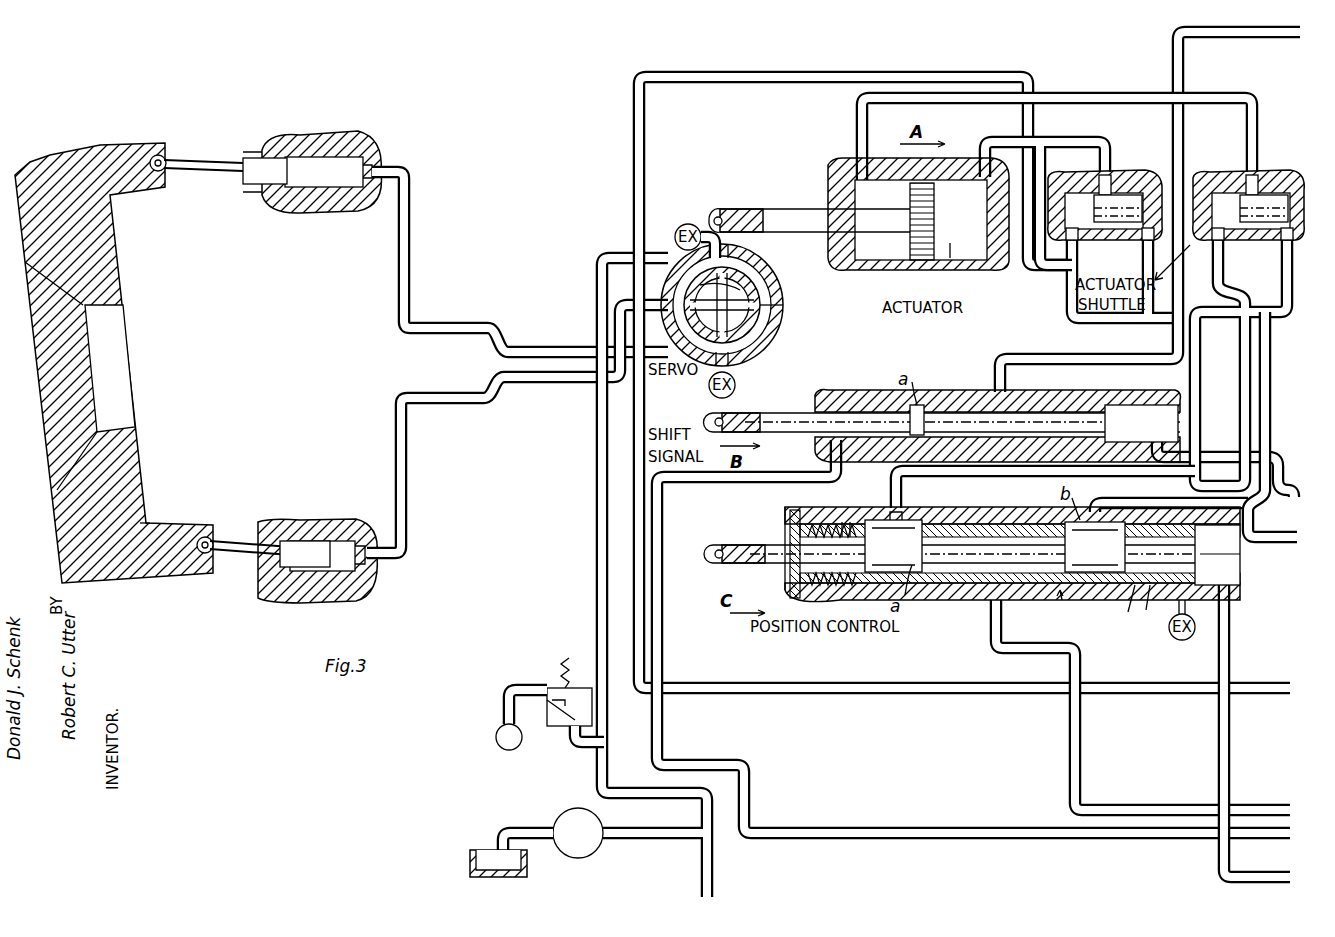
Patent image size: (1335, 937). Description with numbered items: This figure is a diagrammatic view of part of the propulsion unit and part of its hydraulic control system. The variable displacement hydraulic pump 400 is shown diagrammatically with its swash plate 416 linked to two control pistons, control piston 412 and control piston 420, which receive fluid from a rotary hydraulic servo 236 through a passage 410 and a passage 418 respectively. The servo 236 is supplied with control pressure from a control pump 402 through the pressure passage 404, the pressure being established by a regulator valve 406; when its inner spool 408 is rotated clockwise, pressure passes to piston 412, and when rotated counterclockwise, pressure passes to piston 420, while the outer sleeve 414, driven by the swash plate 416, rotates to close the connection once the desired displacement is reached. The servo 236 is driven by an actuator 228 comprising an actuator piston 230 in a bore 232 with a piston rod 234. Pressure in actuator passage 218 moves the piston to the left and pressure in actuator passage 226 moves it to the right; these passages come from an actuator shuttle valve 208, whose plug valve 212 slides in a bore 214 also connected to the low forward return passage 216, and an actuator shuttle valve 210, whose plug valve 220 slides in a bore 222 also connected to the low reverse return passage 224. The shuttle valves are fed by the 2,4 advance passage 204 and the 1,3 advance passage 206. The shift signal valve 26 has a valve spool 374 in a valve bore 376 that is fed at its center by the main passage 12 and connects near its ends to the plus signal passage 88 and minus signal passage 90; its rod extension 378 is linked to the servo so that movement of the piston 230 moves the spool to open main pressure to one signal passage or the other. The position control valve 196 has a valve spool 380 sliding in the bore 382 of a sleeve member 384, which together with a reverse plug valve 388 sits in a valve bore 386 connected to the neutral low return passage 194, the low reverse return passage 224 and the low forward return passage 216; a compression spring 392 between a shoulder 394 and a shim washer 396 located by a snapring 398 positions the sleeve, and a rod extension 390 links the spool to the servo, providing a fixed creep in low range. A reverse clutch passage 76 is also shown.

The main passage 12 is at (1172, 52).
The shift signal valve 26 is at (966, 382).
The reverse clutch passage 76 is at (1265, 878).
The plus signal passage 88 is at (1212, 452).
The minus signal passage 90 is at (727, 478).
The neutral low return passage 194 is at (988, 625).
The position control valve 196 is at (1044, 615).
The 2,4 advance passage 204 is at (1243, 690).
The 1,3 advance passage 206 is at (1290, 272).
The actuator shuttle valve 208 is at (1160, 185).
The actuator shuttle valve 210 is at (1197, 185).
The plug valve 212 is at (1105, 192).
The bore 214 is at (1080, 232).
The low forward return passage 216 is at (1070, 290).
The actuator passage 218 is at (1053, 139).
The plug valve 220 is at (1272, 192).
The bore 222 is at (1241, 361).
The low reverse return passage 224 is at (1242, 322).
The actuator passage 226 is at (1208, 96).
The actuator 228 is at (893, 268).
The actuator piston 230 is at (935, 218).
The bore 232 is at (950, 258).
The piston rod 234 is at (790, 229).
The hydraulic servo 236 is at (783, 305).
The valve spool 374 is at (1060, 418).
The valve bore 376 is at (1140, 412).
The rod extension 378 is at (740, 410).
The valve spool 380 is at (990, 520).
The bore 382 is at (1131, 618).
The sleeve member 384 is at (1100, 590).
The valve bore 386 is at (1156, 607).
The reverse plug valve 388 is at (1238, 565).
The rod extension 390 is at (735, 563).
The compression spring 392 is at (845, 517).
The shoulder 394 is at (890, 498).
The shim washer 396 is at (835, 498).
The snapring 398 is at (790, 530).
The variable displacement hydraulic pump 400 is at (152, 232).
The control pump 402 is at (588, 857).
The pressure passage 404 is at (604, 580).
The regulator valve 406 is at (543, 679).
The inner spool 408 is at (745, 285).
The passage 410 is at (594, 270).
The control piston 412 is at (325, 512).
The outer sleeve 414 is at (740, 290).
The swash plate 416 is at (140, 500).
The passage 418 is at (470, 335).
The control piston 420 is at (325, 115).